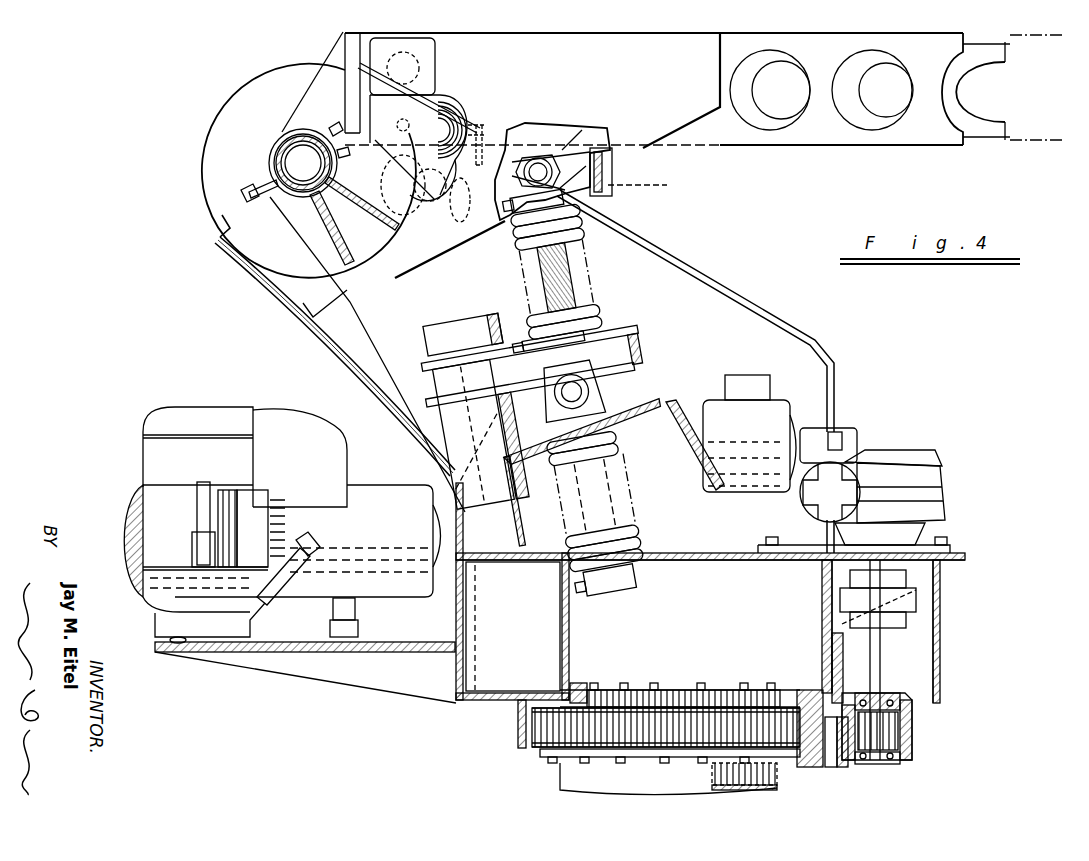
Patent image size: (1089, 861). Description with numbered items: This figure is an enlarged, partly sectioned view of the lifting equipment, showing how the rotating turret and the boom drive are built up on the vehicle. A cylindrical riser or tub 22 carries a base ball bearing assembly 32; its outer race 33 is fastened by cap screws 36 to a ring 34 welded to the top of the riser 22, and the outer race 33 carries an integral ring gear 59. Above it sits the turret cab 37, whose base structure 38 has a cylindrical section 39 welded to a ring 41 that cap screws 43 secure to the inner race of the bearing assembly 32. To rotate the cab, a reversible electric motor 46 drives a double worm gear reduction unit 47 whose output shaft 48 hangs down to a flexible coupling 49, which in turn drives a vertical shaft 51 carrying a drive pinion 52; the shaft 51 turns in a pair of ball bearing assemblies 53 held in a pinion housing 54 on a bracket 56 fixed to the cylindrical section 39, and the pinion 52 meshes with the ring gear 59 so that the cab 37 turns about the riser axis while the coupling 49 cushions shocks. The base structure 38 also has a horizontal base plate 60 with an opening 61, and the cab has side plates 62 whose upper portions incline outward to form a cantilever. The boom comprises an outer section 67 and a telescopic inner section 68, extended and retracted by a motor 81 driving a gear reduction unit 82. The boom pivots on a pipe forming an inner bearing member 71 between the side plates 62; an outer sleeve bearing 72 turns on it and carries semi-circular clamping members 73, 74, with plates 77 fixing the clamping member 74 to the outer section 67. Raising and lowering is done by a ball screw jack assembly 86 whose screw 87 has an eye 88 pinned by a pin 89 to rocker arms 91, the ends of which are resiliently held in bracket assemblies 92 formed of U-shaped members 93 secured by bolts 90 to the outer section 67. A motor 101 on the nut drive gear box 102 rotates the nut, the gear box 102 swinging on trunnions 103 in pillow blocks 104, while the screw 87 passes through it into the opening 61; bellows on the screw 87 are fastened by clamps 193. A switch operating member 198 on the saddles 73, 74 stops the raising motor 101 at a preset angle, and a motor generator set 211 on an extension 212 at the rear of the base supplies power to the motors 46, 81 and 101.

The cylindrical riser 22 is at (585, 770).
The base ball bearing assembly 32 is at (861, 747).
The outer race 33 is at (830, 768).
The ring 34 is at (868, 763).
The cap screws 36 is at (846, 766).
The turret cab 37 is at (702, 256).
The base structure 38 is at (480, 706).
The cylindrical section 39 is at (569, 672).
The ring 41 is at (700, 706).
The cap screws 43 is at (768, 690).
The reversible electric motor 46 is at (718, 408).
The double worm gear reduction unit 47 is at (895, 462).
The output shaft 48 is at (906, 574).
The flexible coupling 49 is at (912, 600).
The vertical shaft 51 is at (915, 660).
The drive pinion 52 is at (897, 742).
The ball bearing assemblies 53 is at (890, 700).
The pinion housing 54 is at (910, 713).
The bracket 56 is at (856, 662).
The ring gear 59 is at (546, 733).
The horizontal base plate 60 is at (710, 555).
The opening 61 is at (664, 553).
The side plates 62 is at (280, 276).
The outer boom section 67 is at (866, 138).
The inner telescopic boom section 68 is at (1010, 50).
The inner bearing member 71 is at (283, 165).
The outer sleeve bearing 72 is at (284, 176).
The semi-circular clamping member 73 is at (286, 142).
The semi-circular clamping member 74 is at (300, 194).
The plates 77 is at (416, 266).
The motor 81 is at (405, 222).
The gear reduction unit 82 is at (440, 116).
The ball screw jack assembly 86 is at (565, 150).
The screw 87 is at (575, 290).
The eye 88 is at (558, 152).
The pin 89 is at (538, 165).
The bolts 90 is at (568, 211).
The rocker arms 91 is at (593, 160).
The bracket assemblies 92 is at (612, 176).
The U-shaped member 93 is at (590, 191).
The motor 101 is at (482, 505).
The nut drive gear box 102 is at (640, 345).
The trunnions 103 is at (572, 388).
The pillow blocks 104 is at (640, 390).
The clamps 193 is at (535, 212).
The switch operating member 198 is at (240, 199).
The motor generator set 211 is at (153, 457).
The extension 212 is at (240, 655).